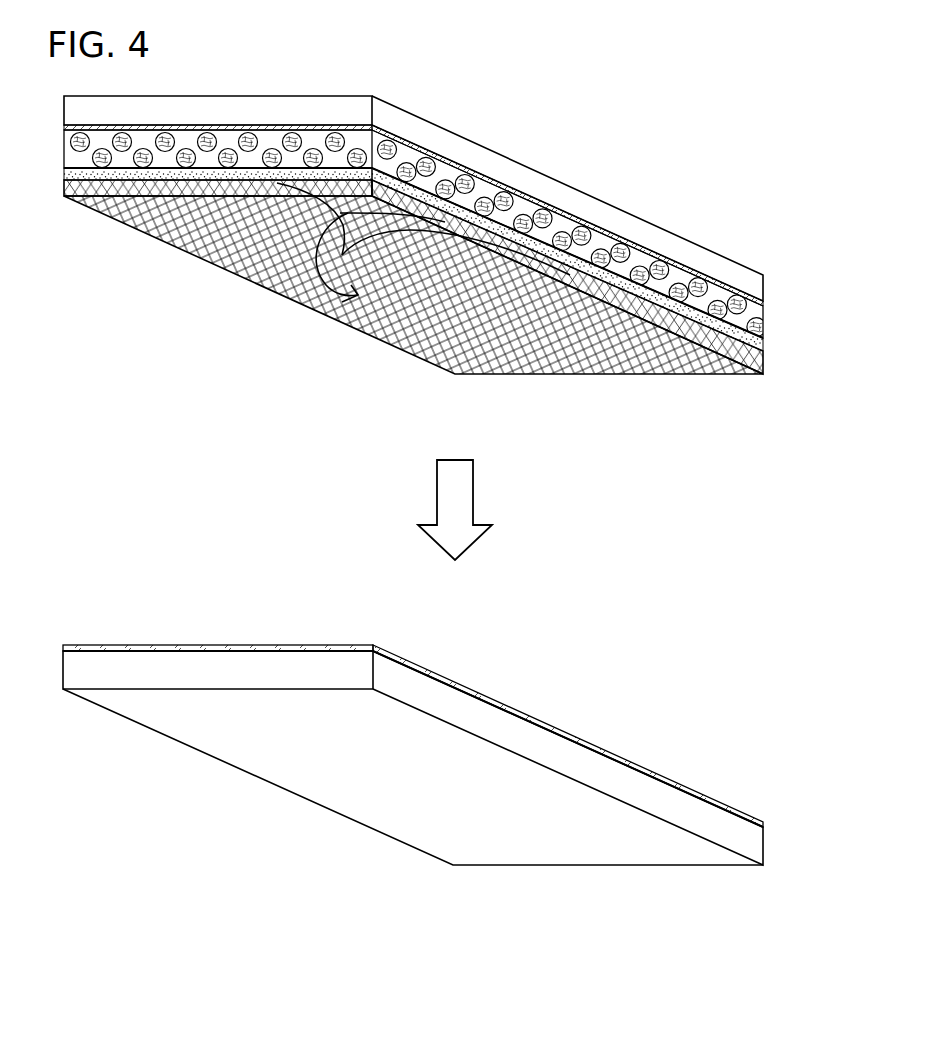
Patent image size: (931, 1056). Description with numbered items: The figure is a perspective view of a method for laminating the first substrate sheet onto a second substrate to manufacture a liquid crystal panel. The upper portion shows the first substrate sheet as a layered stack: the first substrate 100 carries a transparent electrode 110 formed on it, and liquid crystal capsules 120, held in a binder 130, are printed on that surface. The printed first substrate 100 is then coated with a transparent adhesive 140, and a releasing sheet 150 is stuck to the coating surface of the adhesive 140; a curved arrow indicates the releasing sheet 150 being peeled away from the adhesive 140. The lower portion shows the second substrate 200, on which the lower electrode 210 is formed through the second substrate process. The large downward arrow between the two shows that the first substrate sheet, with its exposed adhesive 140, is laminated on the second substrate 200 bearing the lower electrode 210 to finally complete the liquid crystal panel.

The first substrate 100 is at (461, 246).
The transparent electrode 110 is at (755, 282).
The binder 130 is at (757, 316).
The liquid crystal capsule 120 is at (755, 333).
The transparent adhesive 140 is at (762, 351).
The releasing sheet 150 is at (760, 362).
The second substrate 200 is at (449, 756).
The lower electrode 210 is at (765, 823).